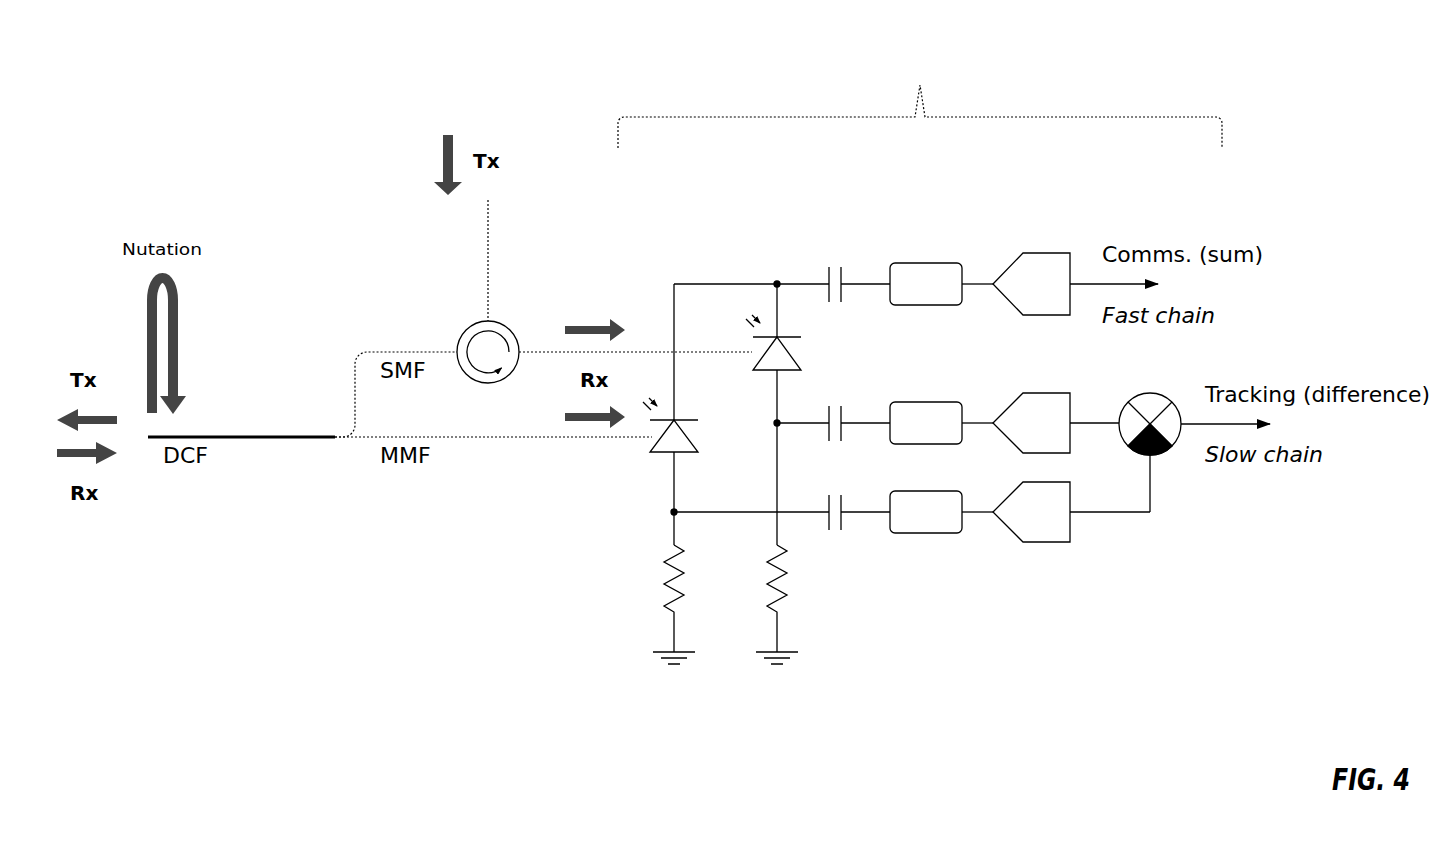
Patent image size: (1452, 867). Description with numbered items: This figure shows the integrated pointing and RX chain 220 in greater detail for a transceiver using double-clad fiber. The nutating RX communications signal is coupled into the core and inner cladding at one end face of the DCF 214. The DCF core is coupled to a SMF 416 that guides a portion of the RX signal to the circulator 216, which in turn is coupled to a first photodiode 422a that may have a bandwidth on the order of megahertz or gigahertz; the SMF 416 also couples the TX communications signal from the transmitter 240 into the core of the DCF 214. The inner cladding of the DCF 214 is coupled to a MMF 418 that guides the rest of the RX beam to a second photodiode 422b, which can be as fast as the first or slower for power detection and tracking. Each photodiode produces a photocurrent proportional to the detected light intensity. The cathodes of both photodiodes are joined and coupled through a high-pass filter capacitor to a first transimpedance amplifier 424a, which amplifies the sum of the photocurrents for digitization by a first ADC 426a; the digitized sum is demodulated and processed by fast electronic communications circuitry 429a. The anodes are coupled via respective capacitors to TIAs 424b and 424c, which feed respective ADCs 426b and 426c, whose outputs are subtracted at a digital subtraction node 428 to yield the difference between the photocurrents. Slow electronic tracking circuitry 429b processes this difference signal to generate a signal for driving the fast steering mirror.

The double-clad fiber (DCF) 214 is at (241, 471).
The circulator 216 is at (466, 337).
The integrated pointing and RX chain 220 is at (920, 90).
The transmitter 240 is at (497, 228).
The single-mode fiber (SMF) 416 is at (372, 393).
The multi-mode fiber (MMF) 418 is at (493, 468).
The first photodiode 422a is at (740, 351).
The second photodiode 422b is at (635, 440).
The first transimpedance amplifier (TIA) 424a is at (926, 262).
The transimpedance amplifier (TIA) 424b is at (926, 402).
The transimpedance amplifier (TIA) 424c is at (926, 536).
The first analog-to-digital converter (ADC) 426a is at (1034, 264).
The analog-to-digital converter (ADC) 426b is at (1034, 404).
The analog-to-digital converter (ADC) 426c is at (1034, 536).
The digital subtraction node 428 is at (1125, 435).
The fast electronic communications circuitry 429a is at (1183, 291).
The slow electronic tracking circuitry 429b is at (1285, 431).